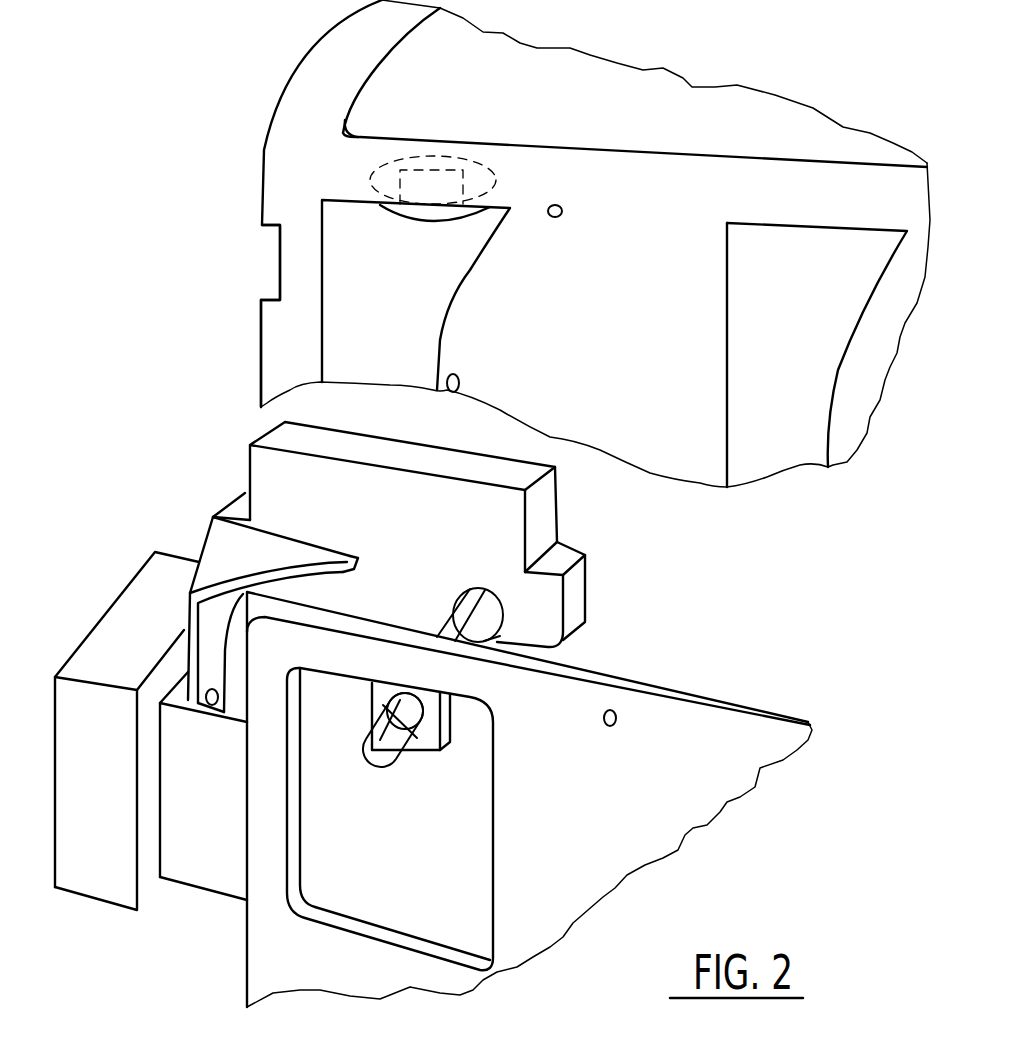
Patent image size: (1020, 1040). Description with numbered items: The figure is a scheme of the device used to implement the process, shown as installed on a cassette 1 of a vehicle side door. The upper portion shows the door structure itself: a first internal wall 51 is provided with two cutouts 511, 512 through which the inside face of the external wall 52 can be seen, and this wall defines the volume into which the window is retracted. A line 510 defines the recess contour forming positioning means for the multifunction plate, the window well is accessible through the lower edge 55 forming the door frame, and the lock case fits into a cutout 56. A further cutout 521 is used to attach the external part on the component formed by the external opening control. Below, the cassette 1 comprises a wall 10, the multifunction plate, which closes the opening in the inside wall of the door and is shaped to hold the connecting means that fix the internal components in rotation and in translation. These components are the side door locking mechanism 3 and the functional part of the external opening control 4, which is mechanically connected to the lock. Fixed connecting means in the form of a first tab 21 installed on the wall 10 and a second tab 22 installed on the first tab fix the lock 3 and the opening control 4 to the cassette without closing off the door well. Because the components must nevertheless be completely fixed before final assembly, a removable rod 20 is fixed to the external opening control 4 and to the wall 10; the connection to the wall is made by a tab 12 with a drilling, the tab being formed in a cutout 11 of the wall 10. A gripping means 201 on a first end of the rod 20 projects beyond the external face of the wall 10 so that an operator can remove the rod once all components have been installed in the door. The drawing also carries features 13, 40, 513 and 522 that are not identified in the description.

The cassette 1 is at (670, 649).
The side door locking mechanism 3 is at (145, 622).
The external opening control 4 is at (451, 518).
The wall 10 is at (529, 805).
The cutout 11 is at (483, 907).
The tab 12 is at (452, 722).
The hole 13 is at (608, 727).
The rod 20 is at (545, 594).
The first tab 21 is at (200, 860).
The second tab 22 is at (227, 555).
The pin 40 is at (457, 588).
The first internal wall 51 is at (561, 243).
The external wall 52 is at (401, 305).
The lower edge 55 is at (358, 124).
The cutout 56 is at (277, 230).
The gripping means 201 is at (387, 765).
The line 510 is at (637, 180).
The cutout 511 is at (329, 346).
The cutout 512 is at (733, 286).
The hole 513 is at (555, 218).
The cutout 521 is at (457, 167).
The oval recess 522 is at (387, 173).